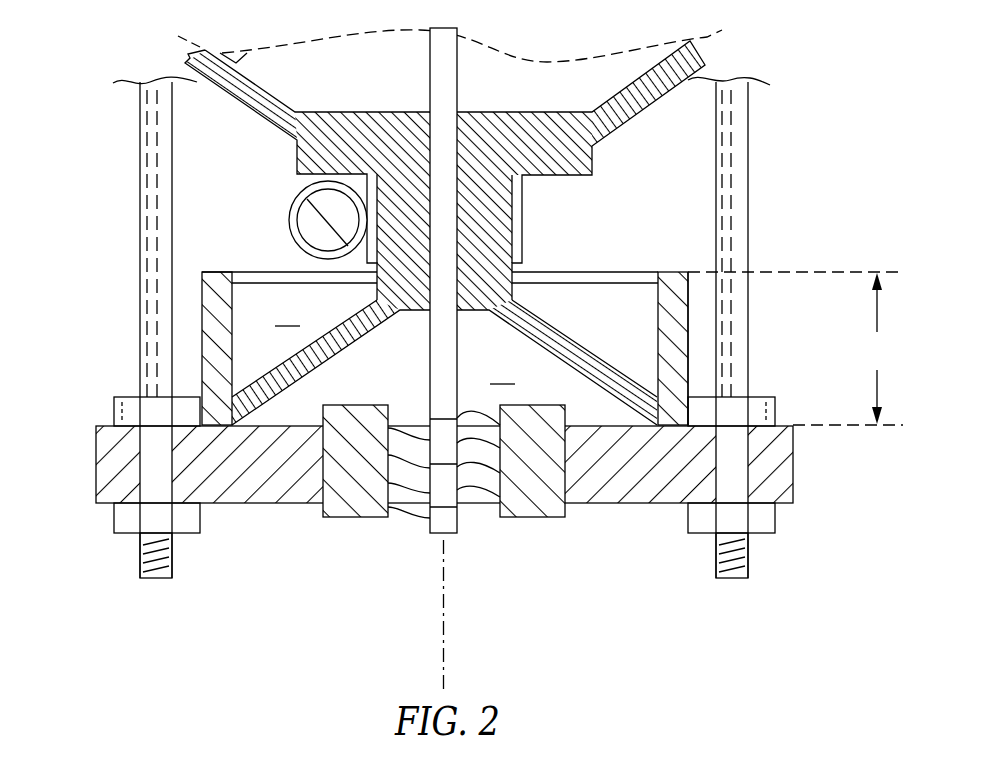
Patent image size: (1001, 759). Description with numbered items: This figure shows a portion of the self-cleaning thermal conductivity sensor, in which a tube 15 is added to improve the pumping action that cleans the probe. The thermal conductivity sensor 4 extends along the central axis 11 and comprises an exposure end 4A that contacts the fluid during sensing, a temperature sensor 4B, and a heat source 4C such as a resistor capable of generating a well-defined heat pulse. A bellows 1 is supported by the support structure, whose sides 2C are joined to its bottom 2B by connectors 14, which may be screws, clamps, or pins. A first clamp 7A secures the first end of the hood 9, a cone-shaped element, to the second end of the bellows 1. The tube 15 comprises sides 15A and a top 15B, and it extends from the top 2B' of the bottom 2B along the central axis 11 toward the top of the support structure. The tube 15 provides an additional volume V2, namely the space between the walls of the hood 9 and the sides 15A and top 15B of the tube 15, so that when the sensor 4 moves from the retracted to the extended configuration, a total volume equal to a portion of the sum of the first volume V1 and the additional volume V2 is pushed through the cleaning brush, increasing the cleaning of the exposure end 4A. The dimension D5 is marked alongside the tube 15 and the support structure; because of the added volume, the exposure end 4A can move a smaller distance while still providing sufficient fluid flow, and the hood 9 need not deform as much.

The bellows 1 is at (635, 115).
The bottom 2B is at (411, 464).
The top of bottom 2B' is at (411, 404).
The sides 2C is at (140, 157).
The thermal conductivity sensor 4 is at (445, 158).
The exposure end 4A is at (430, 535).
The temperature sensor 4B is at (468, 487).
The heat source 4C is at (445, 432).
The first clamp 7A is at (290, 222).
The hood 9 is at (278, 367).
The central axis 11 is at (455, 612).
The connectors 14 is at (188, 533).
The tube 15 is at (688, 352).
The sides 15A is at (688, 291).
The top 15B is at (580, 270).
The first volume V1 is at (502, 372).
The additional volume V2 is at (287, 314).
The housing height dimension D5 is at (795, 348).